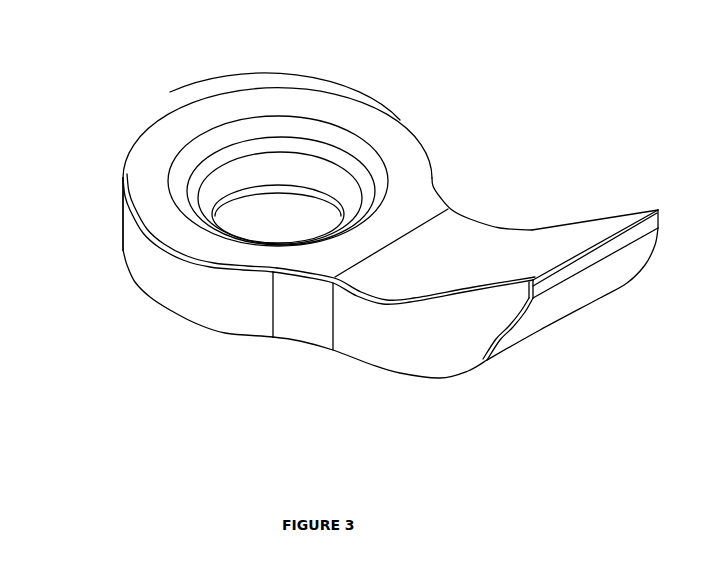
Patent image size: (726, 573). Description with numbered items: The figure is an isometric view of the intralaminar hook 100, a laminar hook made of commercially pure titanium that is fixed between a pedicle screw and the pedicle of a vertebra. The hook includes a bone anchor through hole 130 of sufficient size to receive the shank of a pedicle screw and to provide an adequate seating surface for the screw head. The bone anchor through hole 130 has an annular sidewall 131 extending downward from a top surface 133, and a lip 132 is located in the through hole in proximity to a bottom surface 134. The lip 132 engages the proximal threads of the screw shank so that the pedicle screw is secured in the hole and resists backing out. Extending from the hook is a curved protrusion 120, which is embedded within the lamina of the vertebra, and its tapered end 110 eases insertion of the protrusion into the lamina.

The intralaminar hook 100 is at (151, 94).
The tapered end 110 is at (605, 247).
The curved protrusion 120 is at (367, 347).
The bone anchor through hole 130 is at (290, 222).
The annular sidewall 131 is at (217, 152).
The lip 132 is at (207, 190).
The top surface 133 is at (313, 108).
The bottom surface 134 is at (168, 317).